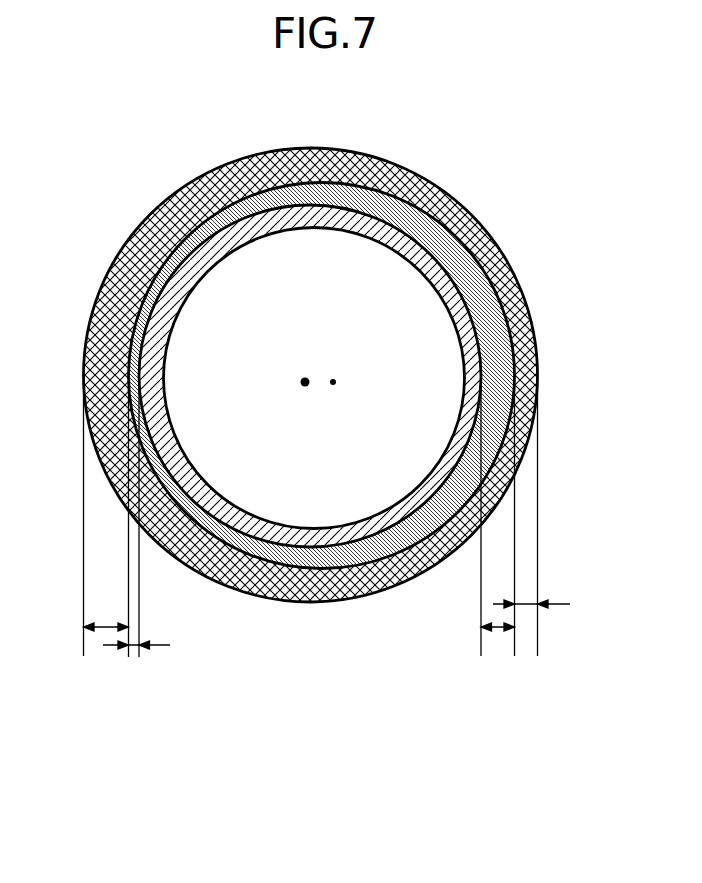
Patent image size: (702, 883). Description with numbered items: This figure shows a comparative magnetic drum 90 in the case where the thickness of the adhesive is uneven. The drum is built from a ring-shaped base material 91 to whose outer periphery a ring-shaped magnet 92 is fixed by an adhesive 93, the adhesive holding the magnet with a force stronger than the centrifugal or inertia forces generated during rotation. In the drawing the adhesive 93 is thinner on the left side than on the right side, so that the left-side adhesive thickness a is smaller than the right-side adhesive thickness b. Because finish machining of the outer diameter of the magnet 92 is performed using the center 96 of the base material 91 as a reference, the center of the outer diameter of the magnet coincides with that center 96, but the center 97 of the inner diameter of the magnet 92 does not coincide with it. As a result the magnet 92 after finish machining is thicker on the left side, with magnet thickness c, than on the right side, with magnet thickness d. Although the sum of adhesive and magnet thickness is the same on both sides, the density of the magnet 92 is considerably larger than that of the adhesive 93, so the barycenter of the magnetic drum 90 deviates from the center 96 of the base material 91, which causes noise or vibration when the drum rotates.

The magnetic drum 90 is at (311, 416).
The base material 91 is at (370, 226).
The magnet 92 is at (487, 235).
The adhesive 93 is at (418, 227).
The center of the base material 96 is at (307, 387).
The center of the inner diameter of the magnet 97 is at (335, 386).
The thickness of the adhesive on the left side a is at (133, 657).
The thickness of the adhesive on the right side b is at (500, 628).
The thickness of the magnet on the left side c is at (100, 628).
The thickness of the magnet on the right side d is at (528, 606).